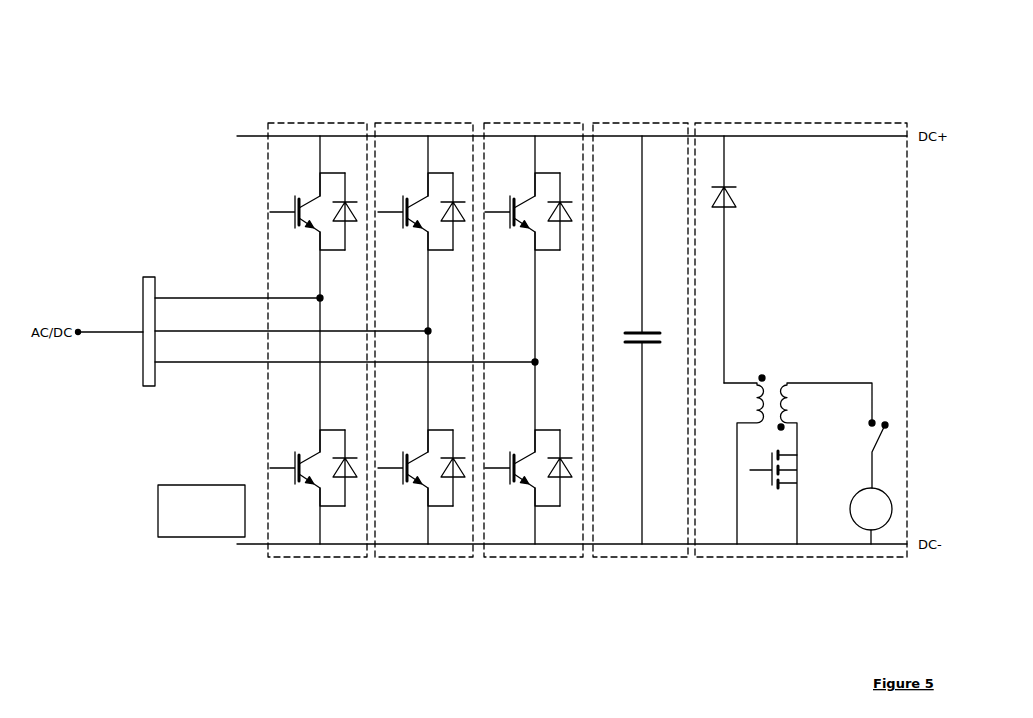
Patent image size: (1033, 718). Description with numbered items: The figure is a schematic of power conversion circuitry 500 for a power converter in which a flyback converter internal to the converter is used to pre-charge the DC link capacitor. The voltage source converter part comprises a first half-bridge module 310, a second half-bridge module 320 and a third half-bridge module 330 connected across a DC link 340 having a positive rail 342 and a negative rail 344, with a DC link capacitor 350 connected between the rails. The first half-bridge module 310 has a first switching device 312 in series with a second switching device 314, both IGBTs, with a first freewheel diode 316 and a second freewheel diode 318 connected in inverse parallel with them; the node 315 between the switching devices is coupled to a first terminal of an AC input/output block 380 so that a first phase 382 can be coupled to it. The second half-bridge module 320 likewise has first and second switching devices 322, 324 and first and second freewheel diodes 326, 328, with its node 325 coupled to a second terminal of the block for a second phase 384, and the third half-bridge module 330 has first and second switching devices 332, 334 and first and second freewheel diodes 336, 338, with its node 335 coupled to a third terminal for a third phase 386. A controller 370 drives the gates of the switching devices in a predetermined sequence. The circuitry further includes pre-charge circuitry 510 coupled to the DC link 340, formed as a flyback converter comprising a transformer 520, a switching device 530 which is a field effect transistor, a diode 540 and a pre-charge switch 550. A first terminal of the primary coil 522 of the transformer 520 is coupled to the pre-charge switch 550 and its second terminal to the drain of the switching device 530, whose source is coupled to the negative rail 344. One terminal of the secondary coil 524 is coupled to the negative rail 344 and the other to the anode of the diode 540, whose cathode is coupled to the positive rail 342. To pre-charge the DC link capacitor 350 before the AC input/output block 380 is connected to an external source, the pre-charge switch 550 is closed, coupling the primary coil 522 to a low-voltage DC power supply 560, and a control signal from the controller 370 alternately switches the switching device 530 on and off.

The power conversion circuitry 500 is at (118, 82).
The first half-bridge module 310 is at (327, 123).
The first switching device 312 is at (296, 196).
The second switching device 314 is at (296, 452).
The node 315 is at (321, 296).
The first freewheel diode 316 is at (345, 200).
The second freewheel diode 318 is at (345, 456).
The second half-bridge module 320 is at (433, 123).
The first switching device 322 is at (404, 196).
The second switching device 324 is at (404, 452).
The node 325 is at (429, 330).
The first freewheel diode 326 is at (453, 200).
The second freewheel diode 328 is at (453, 456).
The third half-bridge module 330 is at (542, 123).
The first switching device 332 is at (511, 196).
The second switching device 334 is at (511, 452).
The node 335 is at (536, 360).
The first freewheel diode 336 is at (560, 200).
The second freewheel diode 338 is at (560, 456).
The DC link 340 is at (635, 123).
The positive rail 342 is at (672, 137).
The negative rail 344 is at (653, 543).
The DC link capacitor 350 is at (650, 345).
The controller 370 is at (201, 511).
The AC input/output block 380 is at (150, 277).
The first phase 382 is at (173, 297).
The second phase 384 is at (199, 330).
The third phase 386 is at (231, 361).
The pre-charge circuitry 510 is at (848, 123).
The transformer 520 is at (798, 424).
The primary coil 522 is at (797, 382).
The secondary coil 524 is at (754, 381).
The switching device 530 is at (773, 486).
The diode 540 is at (728, 207).
The pre-charge switch 550 is at (877, 452).
The low-voltage DC power supply 560 is at (856, 500).